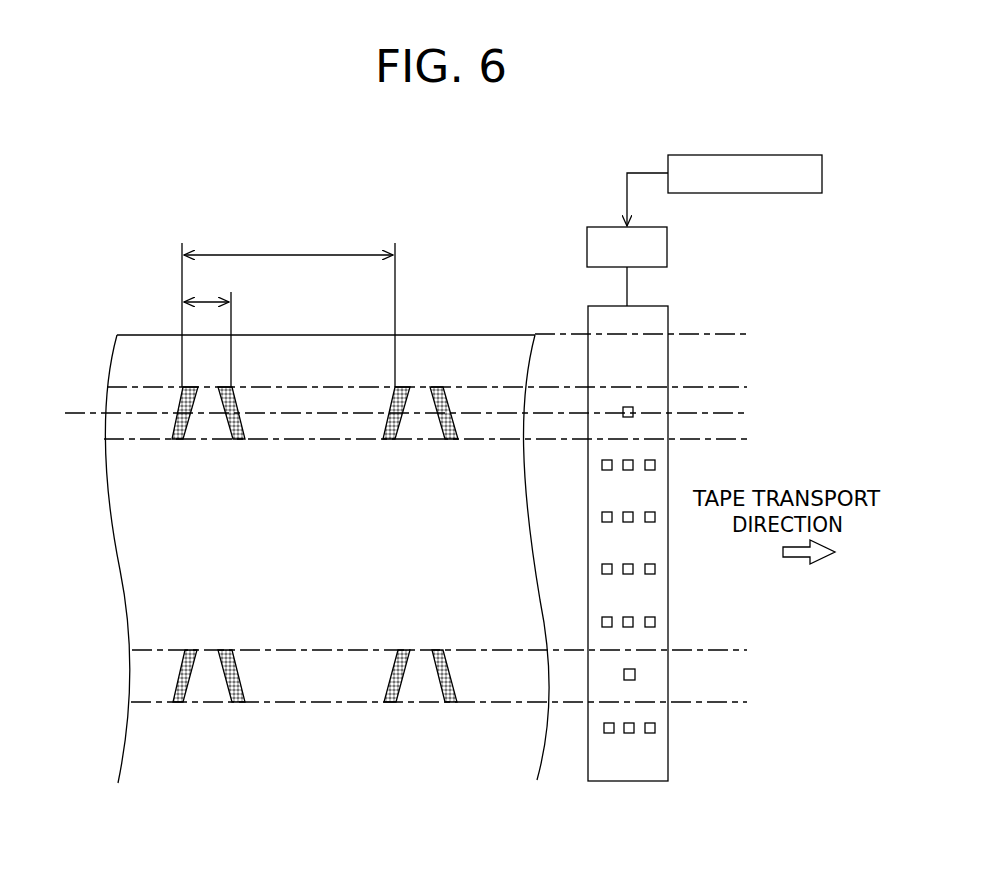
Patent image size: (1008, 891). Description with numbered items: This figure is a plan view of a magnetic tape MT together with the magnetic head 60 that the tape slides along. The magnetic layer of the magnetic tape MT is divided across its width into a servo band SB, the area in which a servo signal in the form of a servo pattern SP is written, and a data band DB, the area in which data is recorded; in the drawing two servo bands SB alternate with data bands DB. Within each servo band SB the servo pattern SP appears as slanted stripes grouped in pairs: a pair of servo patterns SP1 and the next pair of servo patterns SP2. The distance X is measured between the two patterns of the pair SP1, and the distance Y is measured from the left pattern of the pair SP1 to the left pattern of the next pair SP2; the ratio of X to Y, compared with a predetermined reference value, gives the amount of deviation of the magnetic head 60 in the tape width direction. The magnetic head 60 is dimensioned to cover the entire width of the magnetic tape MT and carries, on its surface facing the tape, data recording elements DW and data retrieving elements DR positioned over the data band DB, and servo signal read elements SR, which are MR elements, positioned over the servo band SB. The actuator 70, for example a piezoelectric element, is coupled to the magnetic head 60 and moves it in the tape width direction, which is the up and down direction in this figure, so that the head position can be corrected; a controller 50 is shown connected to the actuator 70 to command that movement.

The controller 50 is at (780, 193).
The magnetic head 60 is at (667, 316).
The actuator 70 is at (667, 242).
The magnetic tape MT is at (488, 330).
The servo pattern SP is at (130, 400).
The servo band SB is at (120, 430).
The data band DB is at (130, 567).
The pair of servo patterns SP1 is at (211, 452).
The next pair of servo patterns SP2 is at (423, 452).
The servo signal read element SR is at (633, 417).
The data recording element DW is at (629, 734).
The data retrieving element DR is at (609, 734).
The distance between a pair of servo patterns X is at (207, 328).
The distance between pairs of servo patterns Y is at (288, 304).